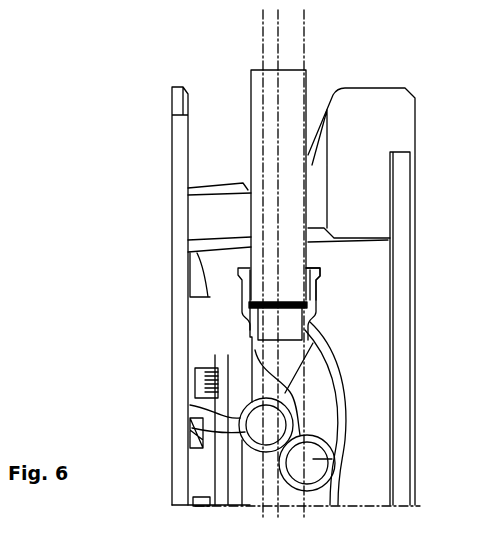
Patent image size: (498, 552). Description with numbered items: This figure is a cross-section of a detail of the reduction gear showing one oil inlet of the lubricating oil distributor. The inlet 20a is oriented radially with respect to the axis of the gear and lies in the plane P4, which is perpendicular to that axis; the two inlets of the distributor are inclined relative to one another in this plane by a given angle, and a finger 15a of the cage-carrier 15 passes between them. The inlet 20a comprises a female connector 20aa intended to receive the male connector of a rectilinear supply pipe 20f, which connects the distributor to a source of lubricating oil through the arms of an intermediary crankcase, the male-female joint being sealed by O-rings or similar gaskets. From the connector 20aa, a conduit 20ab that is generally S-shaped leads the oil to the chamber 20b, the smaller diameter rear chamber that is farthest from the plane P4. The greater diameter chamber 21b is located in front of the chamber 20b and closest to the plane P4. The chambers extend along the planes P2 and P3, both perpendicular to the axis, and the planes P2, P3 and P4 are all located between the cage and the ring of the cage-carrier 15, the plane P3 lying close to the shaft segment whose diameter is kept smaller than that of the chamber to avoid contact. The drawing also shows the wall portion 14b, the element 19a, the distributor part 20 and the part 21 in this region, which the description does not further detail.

The plane P2 is at (263, 53).
The plane P3 is at (304, 55).
The plane P4 is at (278, 22).
The housing wall 14b is at (178, 152).
The cage-carrier 15 is at (385, 283).
The finger 15a is at (366, 118).
The bearing element 19a is at (198, 458).
The lever 20 is at (356, 487).
The inlet 20a is at (238, 268).
The female connector 20aa is at (318, 292).
The conduit 20ab is at (343, 405).
The chamber 20b is at (333, 459).
The supply pipe 20f is at (308, 90).
The pin 21 is at (236, 470).
The chamber 21b is at (255, 432).